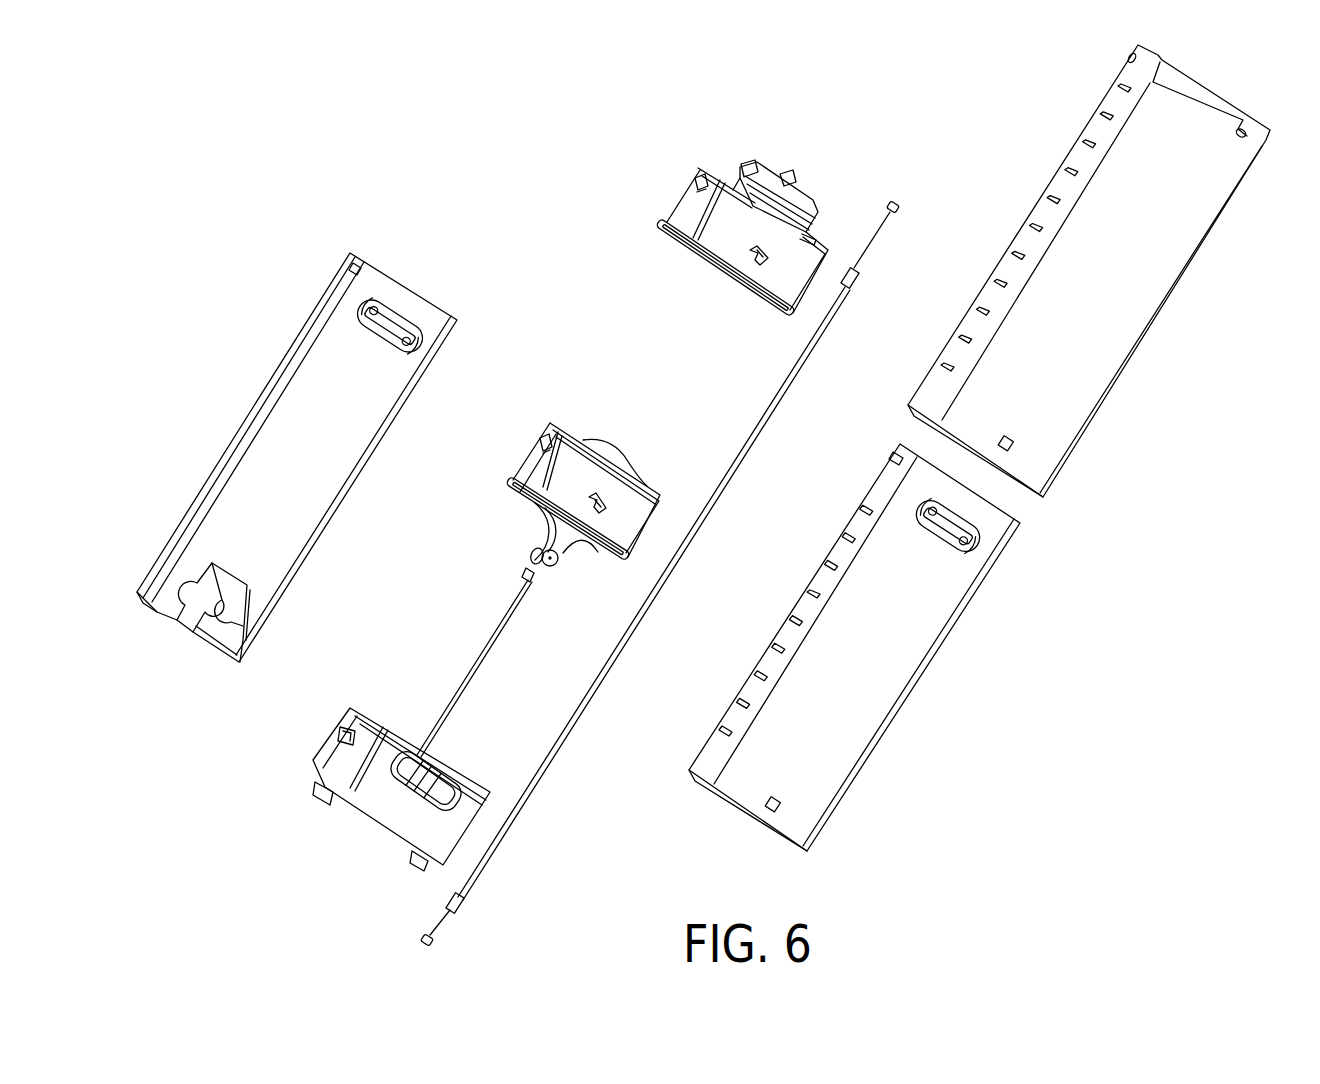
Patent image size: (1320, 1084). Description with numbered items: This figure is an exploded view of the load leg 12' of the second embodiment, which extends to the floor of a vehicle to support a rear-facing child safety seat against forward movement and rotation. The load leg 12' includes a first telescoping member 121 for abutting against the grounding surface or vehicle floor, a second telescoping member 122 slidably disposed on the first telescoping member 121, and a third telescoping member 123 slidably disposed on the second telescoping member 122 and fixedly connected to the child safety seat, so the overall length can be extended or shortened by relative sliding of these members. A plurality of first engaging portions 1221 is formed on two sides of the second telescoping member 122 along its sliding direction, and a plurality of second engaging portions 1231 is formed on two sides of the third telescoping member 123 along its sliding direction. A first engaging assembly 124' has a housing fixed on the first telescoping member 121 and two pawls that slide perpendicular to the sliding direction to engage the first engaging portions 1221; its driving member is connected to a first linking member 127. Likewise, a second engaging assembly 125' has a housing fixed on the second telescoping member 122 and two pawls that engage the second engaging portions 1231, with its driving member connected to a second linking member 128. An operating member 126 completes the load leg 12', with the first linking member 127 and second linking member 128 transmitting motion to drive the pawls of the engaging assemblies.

The load leg 12' is at (307, 82).
The first telescoping member 121 is at (336, 457).
The second telescoping member 122 is at (926, 624).
The first engaging portions 1221 is at (814, 595).
The third telescoping member 123 is at (1131, 309).
The second engaging portions 1231 is at (1052, 195).
The first engaging assembly 124' is at (571, 453).
The second engaging assembly 125' is at (696, 213).
The operating member 126 is at (437, 783).
The first linking member 127 is at (480, 648).
The second linking member 128 is at (592, 690).